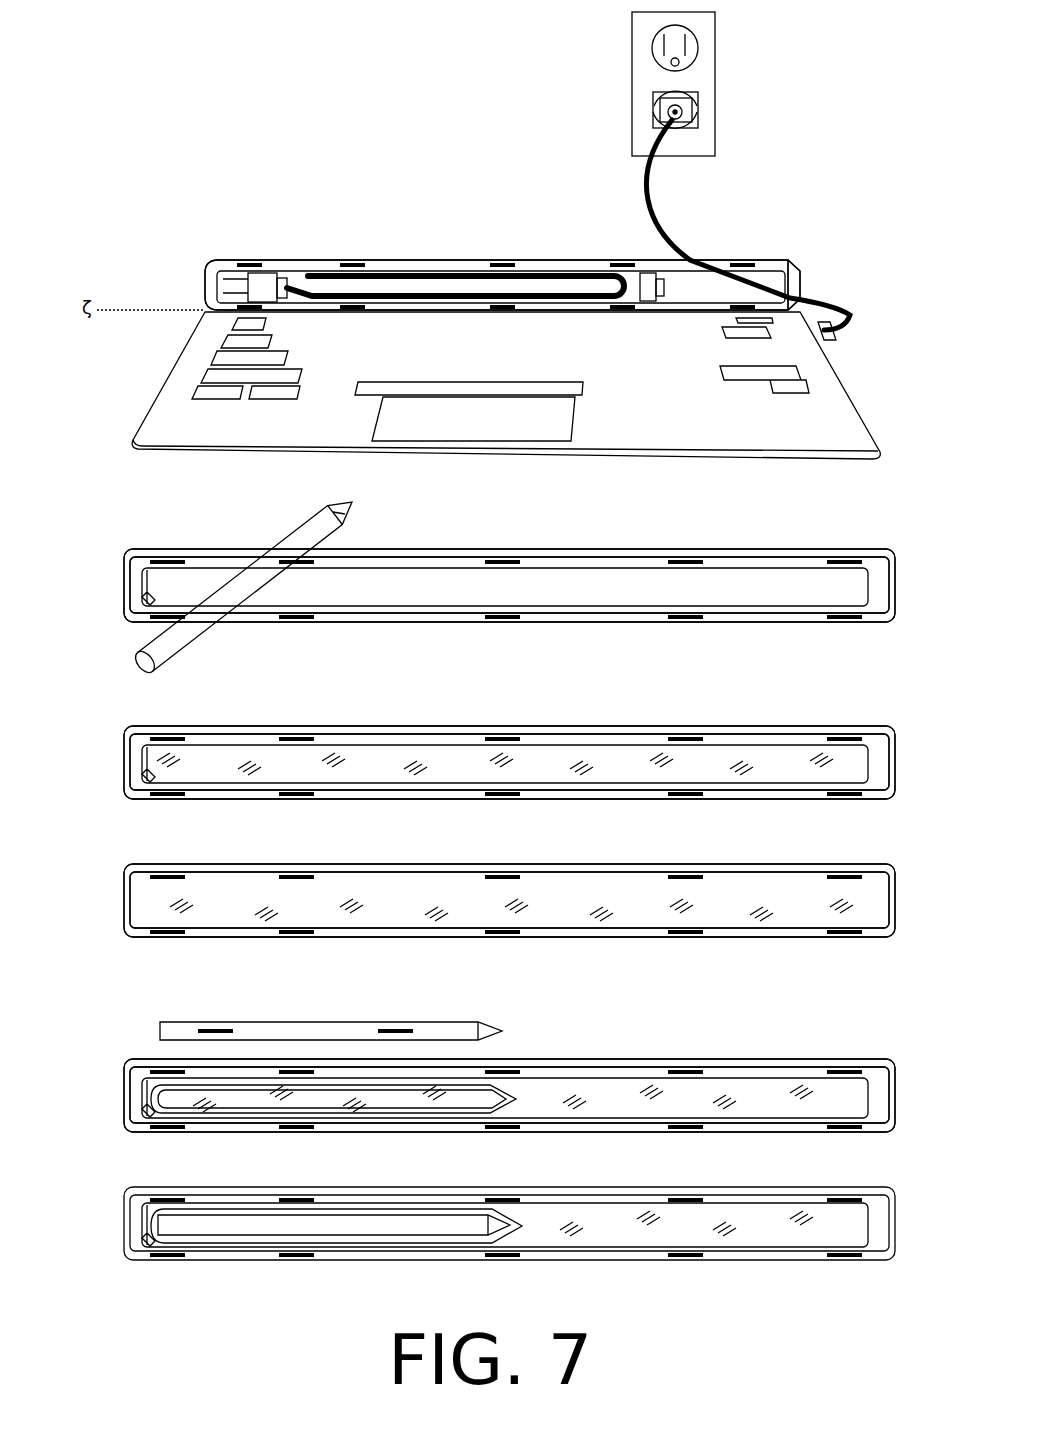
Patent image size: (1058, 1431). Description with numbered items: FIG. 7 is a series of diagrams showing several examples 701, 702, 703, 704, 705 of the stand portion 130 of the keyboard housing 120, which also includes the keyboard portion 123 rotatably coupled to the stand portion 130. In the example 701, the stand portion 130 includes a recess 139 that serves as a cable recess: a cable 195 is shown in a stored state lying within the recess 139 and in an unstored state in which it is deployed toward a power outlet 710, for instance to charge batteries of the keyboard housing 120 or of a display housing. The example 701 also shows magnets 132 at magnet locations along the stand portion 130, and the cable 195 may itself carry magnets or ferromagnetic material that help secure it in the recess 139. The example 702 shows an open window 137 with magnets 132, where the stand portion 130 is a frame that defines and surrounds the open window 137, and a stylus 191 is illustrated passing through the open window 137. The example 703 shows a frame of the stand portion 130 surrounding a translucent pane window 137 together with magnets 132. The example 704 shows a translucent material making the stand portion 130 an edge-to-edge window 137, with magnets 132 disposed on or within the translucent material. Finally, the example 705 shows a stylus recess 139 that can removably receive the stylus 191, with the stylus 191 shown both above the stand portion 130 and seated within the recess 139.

The keyboard housing 120 is at (178, 224).
The keyboard portion 123 is at (846, 397).
The stand portion 130 is at (352, 266).
The magnets 132 is at (506, 738).
The window 137 is at (768, 268).
The recess 139 is at (300, 270).
The stylus 191 is at (292, 537).
The cable 195 is at (560, 268).
The example 701 is at (847, 195).
The example 702 is at (854, 525).
The example 703 is at (854, 711).
The example 704 is at (854, 853).
The example 705 is at (854, 1045).
The power outlet 710 is at (748, 90).